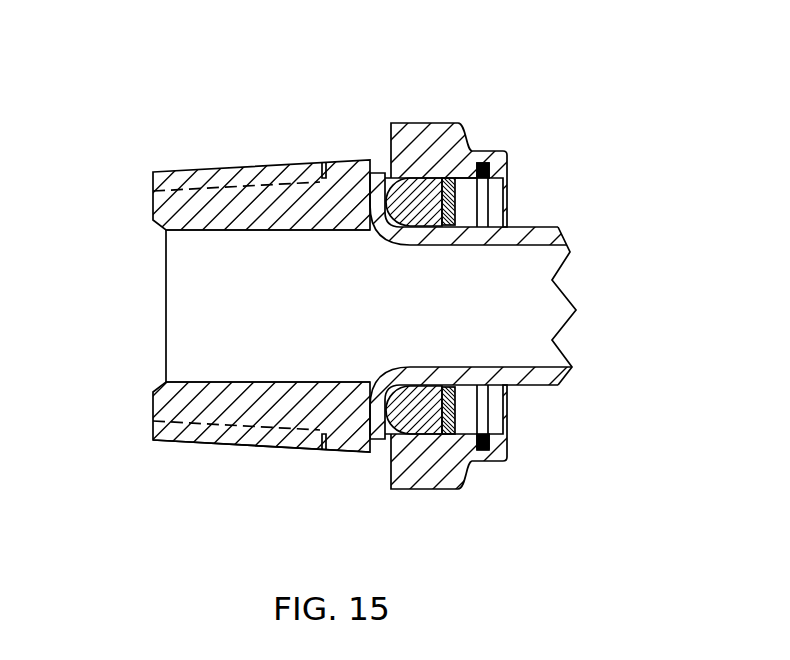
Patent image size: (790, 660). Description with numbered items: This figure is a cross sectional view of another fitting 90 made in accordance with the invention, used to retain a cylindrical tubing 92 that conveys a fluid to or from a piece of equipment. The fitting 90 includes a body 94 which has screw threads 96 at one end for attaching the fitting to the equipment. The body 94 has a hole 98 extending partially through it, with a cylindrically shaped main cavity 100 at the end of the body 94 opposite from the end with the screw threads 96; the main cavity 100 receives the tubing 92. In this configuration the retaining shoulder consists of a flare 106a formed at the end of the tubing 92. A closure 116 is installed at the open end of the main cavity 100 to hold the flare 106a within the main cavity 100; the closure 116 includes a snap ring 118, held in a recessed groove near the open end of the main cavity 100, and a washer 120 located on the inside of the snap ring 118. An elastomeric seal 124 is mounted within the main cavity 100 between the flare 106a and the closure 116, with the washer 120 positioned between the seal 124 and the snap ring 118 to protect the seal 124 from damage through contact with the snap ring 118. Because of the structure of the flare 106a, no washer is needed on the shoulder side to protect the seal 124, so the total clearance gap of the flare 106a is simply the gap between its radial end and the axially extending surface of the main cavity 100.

The fitting 90 is at (339, 575).
The tubing 92 is at (543, 227).
The body 94 is at (347, 160).
The screw threads 96 is at (215, 445).
The hole 98 is at (190, 300).
The main cavity 100 is at (467, 205).
The flare 106a is at (381, 165).
The closure 116 is at (478, 163).
The snap ring 118 is at (488, 457).
The washer 120 is at (455, 420).
The elastomeric seal 124 is at (410, 430).